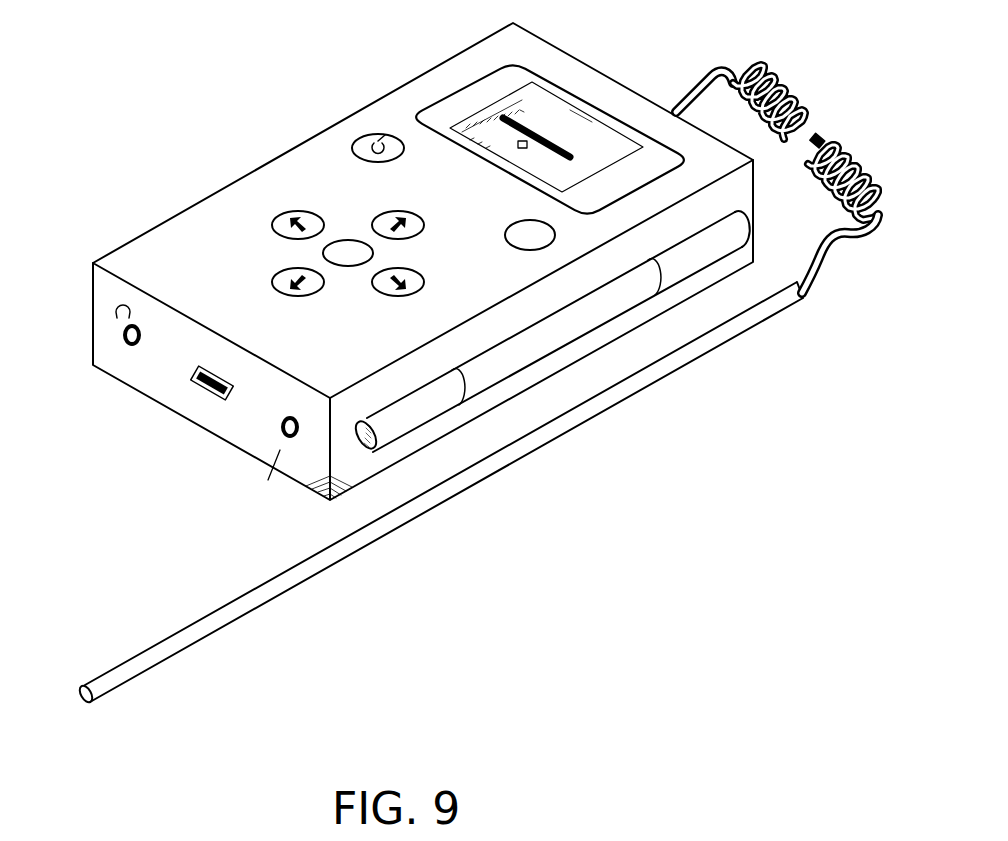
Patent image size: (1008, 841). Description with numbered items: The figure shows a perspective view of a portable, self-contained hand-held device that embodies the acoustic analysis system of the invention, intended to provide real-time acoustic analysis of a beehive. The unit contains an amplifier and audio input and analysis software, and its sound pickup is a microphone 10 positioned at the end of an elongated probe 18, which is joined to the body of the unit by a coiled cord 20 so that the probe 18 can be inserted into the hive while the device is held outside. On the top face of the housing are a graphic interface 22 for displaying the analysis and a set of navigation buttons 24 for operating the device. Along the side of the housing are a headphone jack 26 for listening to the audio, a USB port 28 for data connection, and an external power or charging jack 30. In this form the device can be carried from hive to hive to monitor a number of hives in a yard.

The microphone 10 is at (435, 493).
The probe 18 is at (507, 477).
The cord 20 is at (733, 58).
The graphic interface 22 is at (525, 73).
The navigation buttons 24 is at (318, 188).
The headphone jack 26 is at (105, 322).
The USB port 28 is at (198, 405).
The external power or charging jack 30 is at (357, 467).